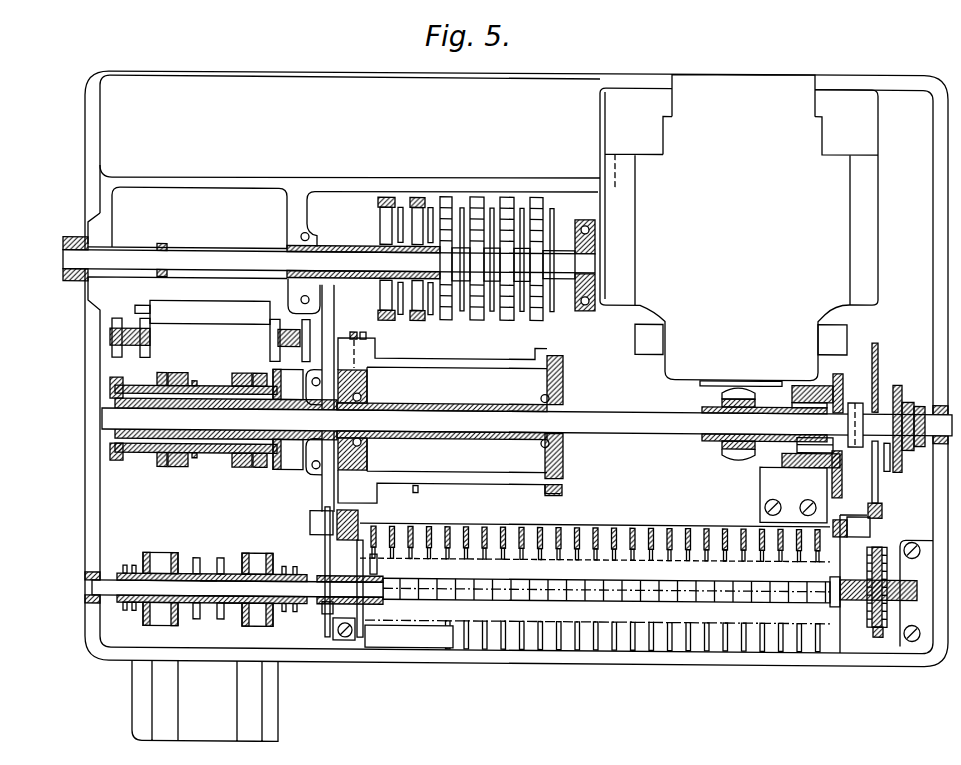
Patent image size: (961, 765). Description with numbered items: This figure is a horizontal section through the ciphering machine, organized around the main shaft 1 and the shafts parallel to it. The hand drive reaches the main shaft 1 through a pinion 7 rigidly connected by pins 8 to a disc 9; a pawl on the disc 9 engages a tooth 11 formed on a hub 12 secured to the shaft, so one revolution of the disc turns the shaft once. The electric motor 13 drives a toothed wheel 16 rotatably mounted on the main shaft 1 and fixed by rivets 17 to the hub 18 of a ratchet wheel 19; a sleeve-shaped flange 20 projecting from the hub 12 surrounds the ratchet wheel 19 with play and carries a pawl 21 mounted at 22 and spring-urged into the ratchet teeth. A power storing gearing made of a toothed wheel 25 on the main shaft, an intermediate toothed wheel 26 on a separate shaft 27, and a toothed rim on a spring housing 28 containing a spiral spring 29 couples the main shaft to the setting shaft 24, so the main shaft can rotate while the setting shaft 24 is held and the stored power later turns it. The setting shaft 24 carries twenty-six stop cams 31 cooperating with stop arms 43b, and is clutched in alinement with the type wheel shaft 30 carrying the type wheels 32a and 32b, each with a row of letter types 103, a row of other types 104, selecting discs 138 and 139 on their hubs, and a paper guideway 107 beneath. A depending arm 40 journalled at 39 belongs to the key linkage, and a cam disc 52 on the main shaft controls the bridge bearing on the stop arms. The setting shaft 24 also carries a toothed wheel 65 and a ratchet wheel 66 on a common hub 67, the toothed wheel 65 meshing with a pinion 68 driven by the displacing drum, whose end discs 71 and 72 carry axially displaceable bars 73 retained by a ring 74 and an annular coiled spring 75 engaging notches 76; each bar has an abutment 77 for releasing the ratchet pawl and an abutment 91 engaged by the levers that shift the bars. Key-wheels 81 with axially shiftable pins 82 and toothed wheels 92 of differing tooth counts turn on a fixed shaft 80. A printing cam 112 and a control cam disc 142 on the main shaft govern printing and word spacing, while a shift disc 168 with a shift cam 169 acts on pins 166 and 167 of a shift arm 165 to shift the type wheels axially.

The main shaft 1 is at (633, 428).
The pinion 7 is at (918, 400).
The pins 8 is at (908, 396).
The disc 9 is at (895, 379).
The tooth 11 is at (887, 450).
The hub 12 is at (863, 444).
The electric motor 13 is at (870, 235).
The toothed wheel 16 is at (725, 452).
The rivets 17 is at (728, 393).
The hub 18 is at (773, 402).
The ratchet wheel 19 is at (812, 399).
The sleeve-shaped flange 20 is at (793, 386).
The pawl 21 is at (800, 462).
The pawl mounting 22 is at (797, 447).
The setting shaft 24 is at (855, 596).
The toothed wheel 25 is at (877, 337).
The intermediate toothed wheel 26 is at (882, 504).
The separate shaft 27 is at (865, 526).
The spring housing 28 is at (887, 621).
The spiral spring 29 is at (878, 631).
The type wheel shaft 30 is at (212, 594).
The stop cams 31 is at (378, 561).
The type wheel 32a is at (228, 610).
The type wheel 32b is at (142, 610).
The journal of depending arm 39 is at (385, 646).
The depending arm 40 is at (408, 646).
The stop arm 43b is at (448, 524).
The cam disc 52 is at (842, 486).
The toothed wheel 65 is at (328, 636).
The ratchet wheel 66 is at (361, 637).
The hub 67 is at (324, 612).
The pinion 68 is at (338, 510).
The end disc 71 is at (368, 461).
The end disc 72 is at (545, 465).
The bars 73 is at (467, 364).
The ring 74 is at (547, 492).
The annular coiled spring 75 is at (352, 331).
The notches 76 is at (363, 331).
The abutment 77 is at (376, 342).
The fixed shaft 80 is at (240, 260).
The key-wheel 81 is at (414, 195).
The pins 82 is at (380, 212).
The abutments 91 is at (535, 356).
The toothed wheel 92 is at (462, 205).
The row of types 103 is at (158, 551).
The row of types 104 is at (143, 551).
The guideway 107 is at (255, 698).
The printing cam 112 is at (165, 468).
The selecting disc 138 is at (208, 578).
The selecting disc 139 is at (196, 556).
The cam disc 142 is at (213, 468).
The shift arm 165 is at (287, 313).
The pin 166 is at (270, 352).
The pin 167 is at (300, 352).
The shift disc 168 is at (295, 470).
The shift cam 169 is at (263, 370).